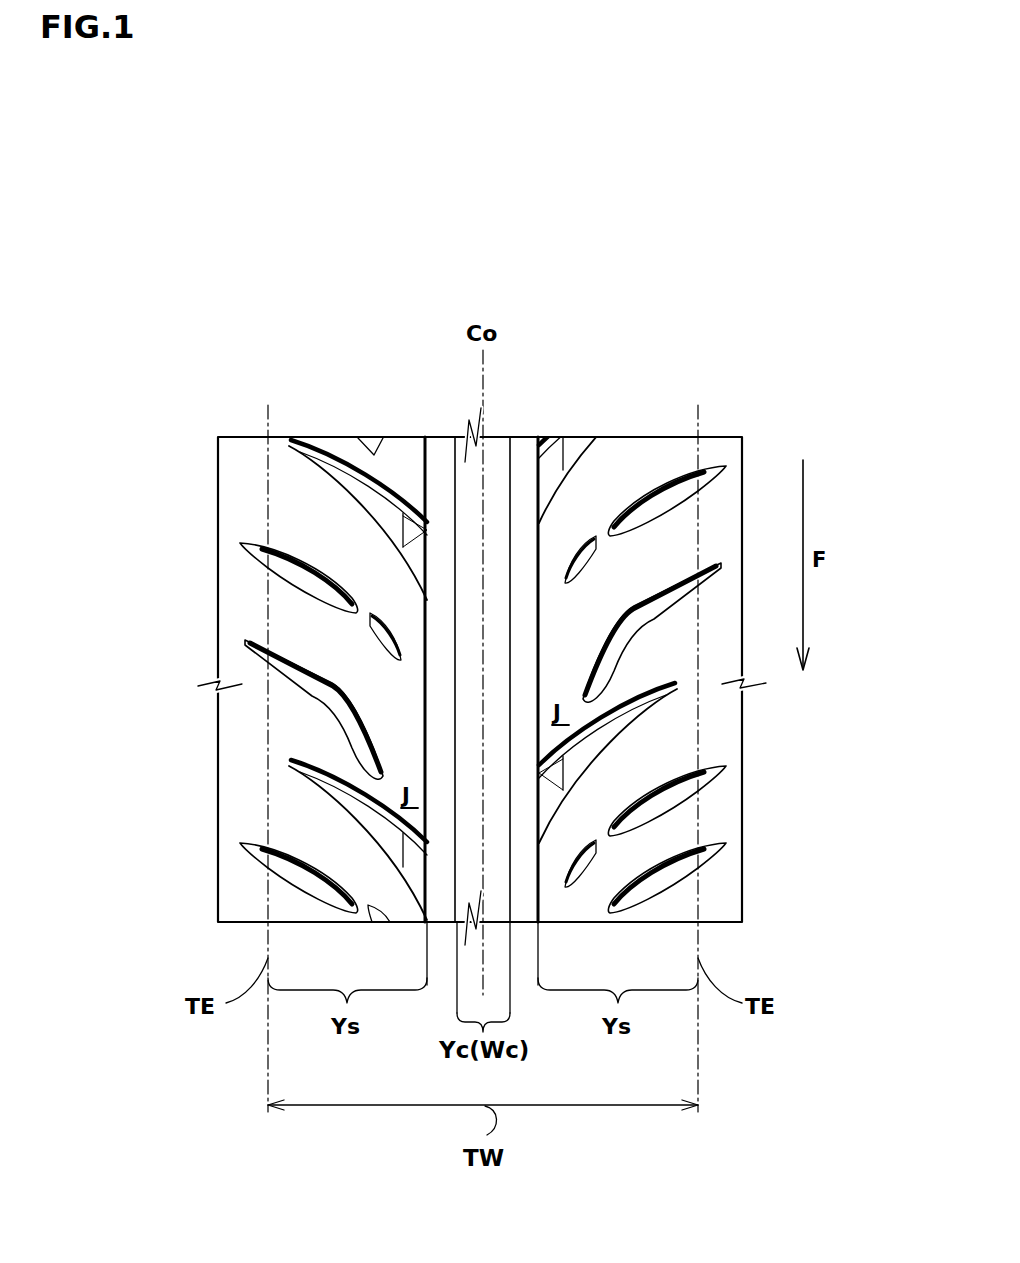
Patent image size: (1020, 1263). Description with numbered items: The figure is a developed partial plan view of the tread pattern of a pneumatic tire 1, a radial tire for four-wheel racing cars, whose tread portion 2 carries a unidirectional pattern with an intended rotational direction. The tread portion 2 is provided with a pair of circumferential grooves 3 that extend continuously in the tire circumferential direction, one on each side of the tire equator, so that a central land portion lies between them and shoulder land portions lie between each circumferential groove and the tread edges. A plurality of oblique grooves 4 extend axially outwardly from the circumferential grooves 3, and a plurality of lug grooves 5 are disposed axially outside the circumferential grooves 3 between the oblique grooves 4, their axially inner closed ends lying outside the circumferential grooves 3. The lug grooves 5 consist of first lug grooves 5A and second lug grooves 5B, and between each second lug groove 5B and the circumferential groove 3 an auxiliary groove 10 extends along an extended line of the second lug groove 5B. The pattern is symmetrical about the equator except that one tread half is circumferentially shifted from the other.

The pneumatic tire 1 is at (482, 596).
The tread portion 2 is at (680, 368).
The circumferential grooves 3 is at (440, 462).
The oblique grooves 4 is at (320, 472).
The lug grooves 5 is at (409, 689).
The first lug grooves 5A is at (293, 675).
The second lug grooves 5B is at (292, 570).
The auxiliary groove 10 is at (375, 622).